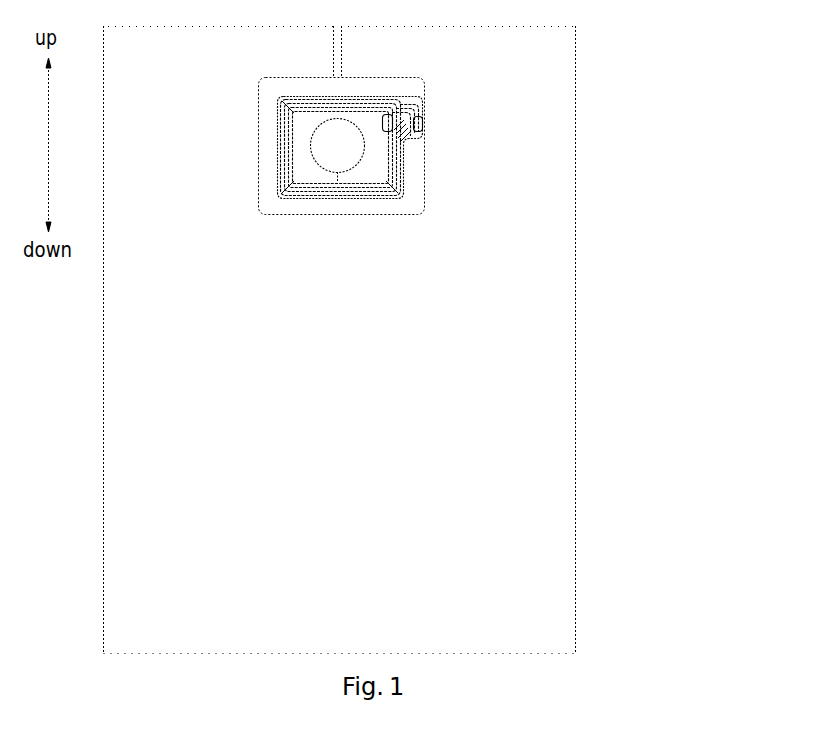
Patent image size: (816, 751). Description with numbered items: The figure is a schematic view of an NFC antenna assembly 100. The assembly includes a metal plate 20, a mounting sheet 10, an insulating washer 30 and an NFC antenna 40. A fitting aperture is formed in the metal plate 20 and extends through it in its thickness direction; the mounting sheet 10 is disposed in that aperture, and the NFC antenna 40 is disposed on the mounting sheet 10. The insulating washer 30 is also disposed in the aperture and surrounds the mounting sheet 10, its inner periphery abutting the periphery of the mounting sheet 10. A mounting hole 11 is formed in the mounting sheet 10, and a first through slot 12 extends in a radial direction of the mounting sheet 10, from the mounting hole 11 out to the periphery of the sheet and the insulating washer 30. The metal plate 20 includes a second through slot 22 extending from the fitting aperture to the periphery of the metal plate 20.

The NFC antenna assembly 100 is at (591, 126).
The mounting sheet 10 is at (302, 122).
The mounting hole 11 is at (330, 146).
The first through slot 12 is at (348, 187).
The metal plate 20 is at (525, 460).
The second through slot 22 is at (338, 49).
The insulating washer 30 is at (415, 188).
The NFC antenna 40 is at (280, 175).